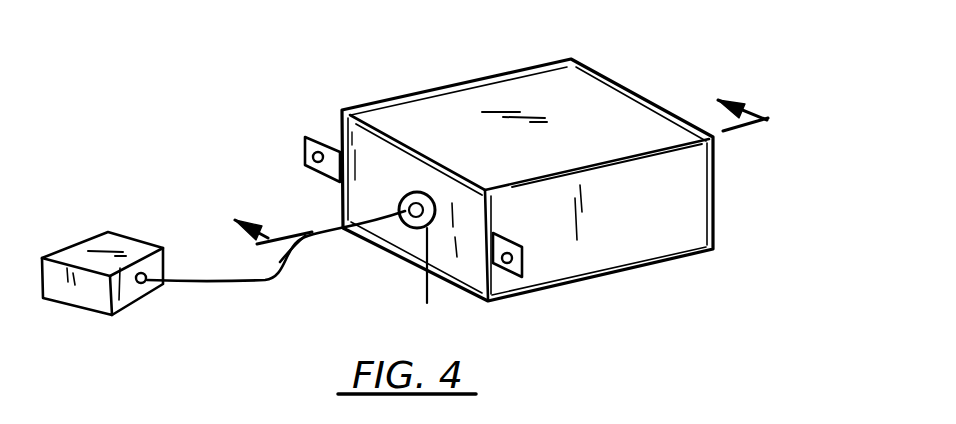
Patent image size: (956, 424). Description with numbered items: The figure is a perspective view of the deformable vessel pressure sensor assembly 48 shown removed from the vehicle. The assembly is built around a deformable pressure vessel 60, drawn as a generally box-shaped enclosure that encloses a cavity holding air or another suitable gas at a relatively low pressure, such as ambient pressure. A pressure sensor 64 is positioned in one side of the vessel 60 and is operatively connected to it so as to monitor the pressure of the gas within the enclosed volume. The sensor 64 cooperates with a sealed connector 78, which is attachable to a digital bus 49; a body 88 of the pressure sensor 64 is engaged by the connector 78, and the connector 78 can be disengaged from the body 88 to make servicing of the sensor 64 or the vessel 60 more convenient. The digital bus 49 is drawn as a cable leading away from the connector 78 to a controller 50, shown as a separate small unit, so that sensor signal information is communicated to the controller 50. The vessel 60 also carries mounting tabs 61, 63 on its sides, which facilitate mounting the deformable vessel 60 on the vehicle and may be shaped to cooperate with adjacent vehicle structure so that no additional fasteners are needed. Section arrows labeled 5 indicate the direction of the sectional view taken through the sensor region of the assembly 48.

The deformable pressure vessel 60 is at (527, 76).
The tab 61 is at (305, 139).
The tab 63 is at (538, 282).
The sealed connector 78 is at (399, 206).
The pressure sensor 64 is at (405, 226).
The body 88 is at (414, 280).
The digital bus 49 is at (203, 285).
The deformable vessel pressure sensor assembly 48 is at (297, 283).
The controller 50 is at (100, 250).
The section line for FIG. 5 is at (489, 160).